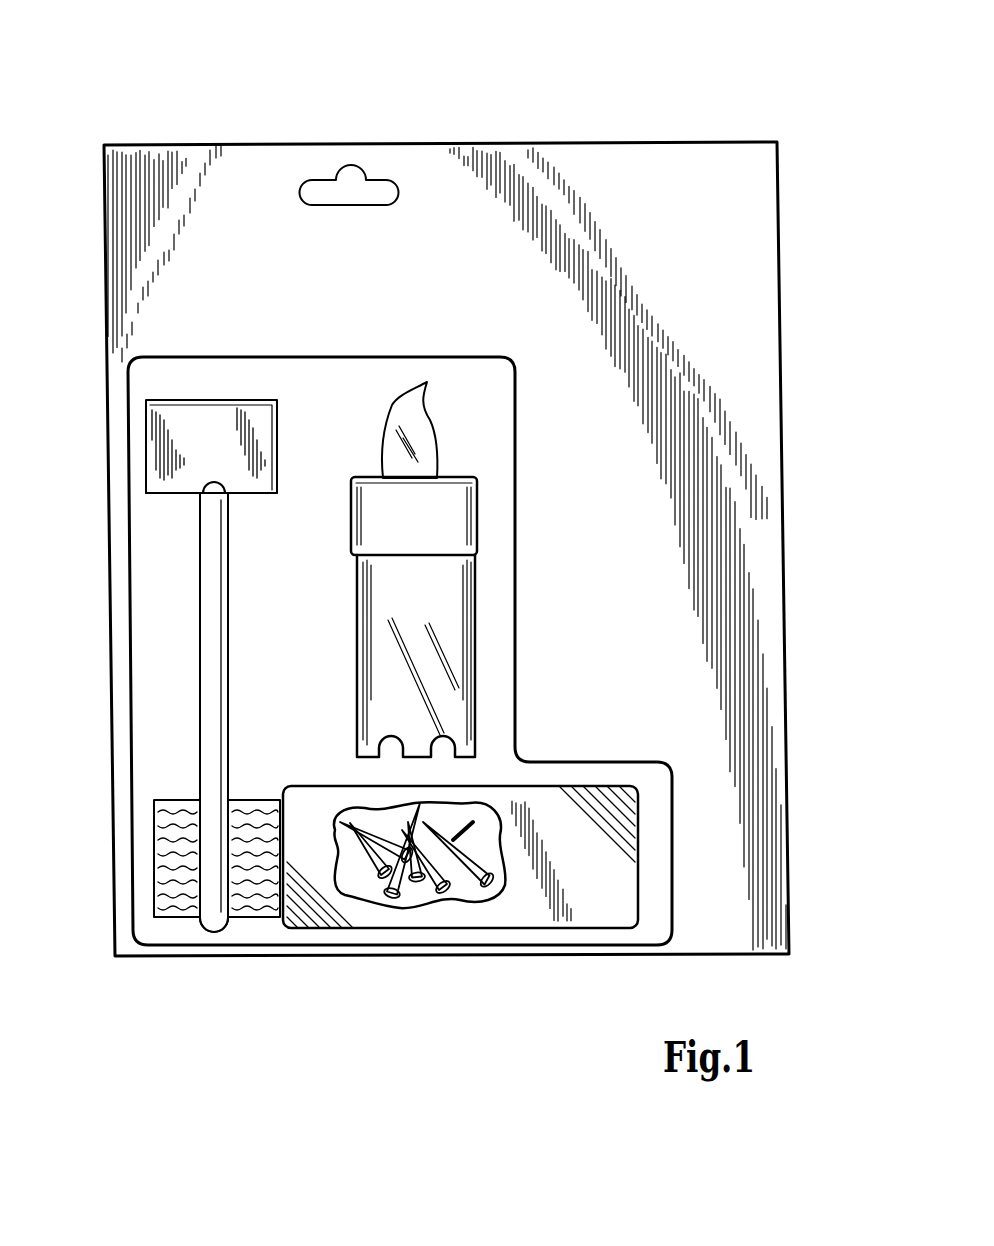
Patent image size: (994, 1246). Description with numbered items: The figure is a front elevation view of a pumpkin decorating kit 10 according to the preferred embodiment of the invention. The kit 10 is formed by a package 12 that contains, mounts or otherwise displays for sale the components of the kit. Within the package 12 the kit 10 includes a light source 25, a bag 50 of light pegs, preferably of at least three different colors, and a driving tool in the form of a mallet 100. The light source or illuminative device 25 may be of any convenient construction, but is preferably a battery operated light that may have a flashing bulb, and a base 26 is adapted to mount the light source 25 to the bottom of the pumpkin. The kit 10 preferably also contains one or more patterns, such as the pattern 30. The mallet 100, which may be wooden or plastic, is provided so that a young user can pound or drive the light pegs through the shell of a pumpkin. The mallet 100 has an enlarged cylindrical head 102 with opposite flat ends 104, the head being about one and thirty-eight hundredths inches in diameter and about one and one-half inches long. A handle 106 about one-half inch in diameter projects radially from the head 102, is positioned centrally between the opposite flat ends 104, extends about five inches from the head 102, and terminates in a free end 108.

The pumpkin decorating kit 10 is at (620, 110).
The package 12 is at (780, 278).
The light source 25 is at (478, 513).
The base 26 is at (492, 731).
The pattern 30 is at (252, 915).
The bag of light pegs 50 is at (523, 900).
The mallet 100 is at (188, 388).
The cylindrical head 102 is at (167, 493).
The flat ends 104 is at (142, 433).
The handle 106 is at (213, 642).
The free end 108 is at (217, 915).